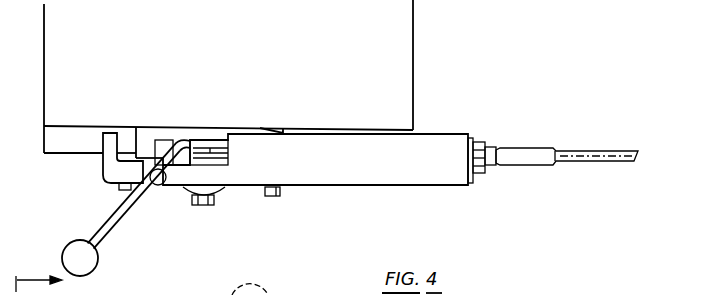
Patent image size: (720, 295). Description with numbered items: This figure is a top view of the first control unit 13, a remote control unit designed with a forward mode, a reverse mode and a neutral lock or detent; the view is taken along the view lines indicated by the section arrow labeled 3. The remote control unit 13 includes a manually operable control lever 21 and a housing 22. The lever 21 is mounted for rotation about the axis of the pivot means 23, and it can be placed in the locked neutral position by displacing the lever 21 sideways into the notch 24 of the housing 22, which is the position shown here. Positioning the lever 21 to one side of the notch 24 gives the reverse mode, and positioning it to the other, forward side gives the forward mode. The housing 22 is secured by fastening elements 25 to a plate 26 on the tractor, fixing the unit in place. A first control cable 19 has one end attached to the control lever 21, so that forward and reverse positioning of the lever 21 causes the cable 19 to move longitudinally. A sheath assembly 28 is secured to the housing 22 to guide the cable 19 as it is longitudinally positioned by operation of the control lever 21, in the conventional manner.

The first control unit 13 is at (458, 122).
The first control cable 19 is at (601, 156).
The control lever 21 is at (120, 223).
The housing 22 is at (375, 175).
The pivot means 23 is at (204, 205).
The notch 24 is at (158, 186).
The fastening elements 25 is at (124, 188).
The plate 26 is at (353, 132).
The sheath assembly 28 is at (482, 172).
The section view direction of FIG. 3 is at (39, 271).